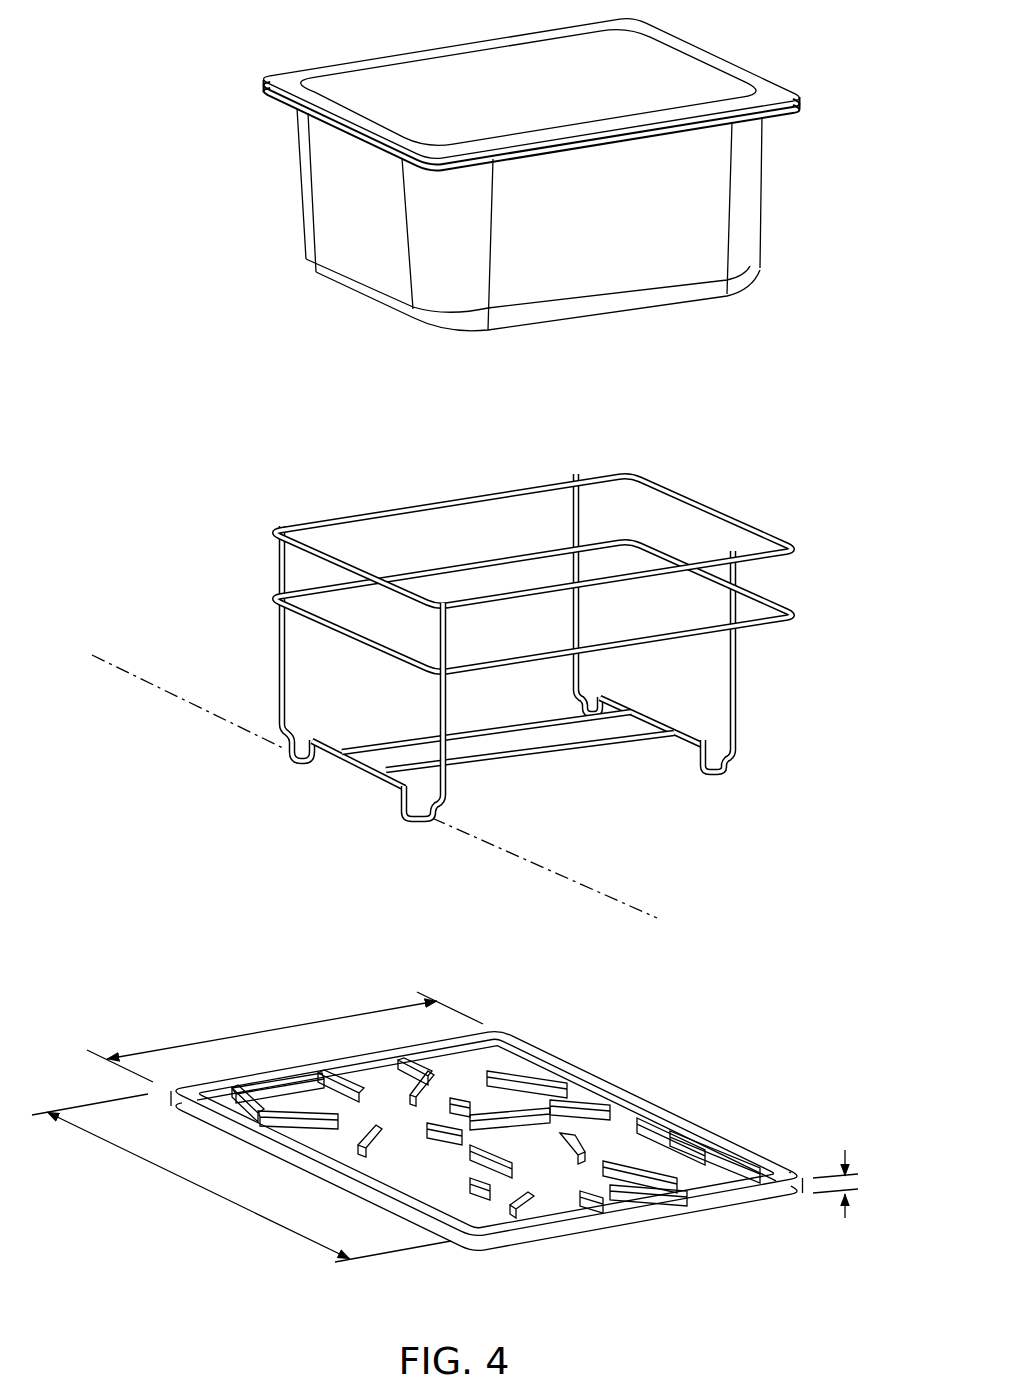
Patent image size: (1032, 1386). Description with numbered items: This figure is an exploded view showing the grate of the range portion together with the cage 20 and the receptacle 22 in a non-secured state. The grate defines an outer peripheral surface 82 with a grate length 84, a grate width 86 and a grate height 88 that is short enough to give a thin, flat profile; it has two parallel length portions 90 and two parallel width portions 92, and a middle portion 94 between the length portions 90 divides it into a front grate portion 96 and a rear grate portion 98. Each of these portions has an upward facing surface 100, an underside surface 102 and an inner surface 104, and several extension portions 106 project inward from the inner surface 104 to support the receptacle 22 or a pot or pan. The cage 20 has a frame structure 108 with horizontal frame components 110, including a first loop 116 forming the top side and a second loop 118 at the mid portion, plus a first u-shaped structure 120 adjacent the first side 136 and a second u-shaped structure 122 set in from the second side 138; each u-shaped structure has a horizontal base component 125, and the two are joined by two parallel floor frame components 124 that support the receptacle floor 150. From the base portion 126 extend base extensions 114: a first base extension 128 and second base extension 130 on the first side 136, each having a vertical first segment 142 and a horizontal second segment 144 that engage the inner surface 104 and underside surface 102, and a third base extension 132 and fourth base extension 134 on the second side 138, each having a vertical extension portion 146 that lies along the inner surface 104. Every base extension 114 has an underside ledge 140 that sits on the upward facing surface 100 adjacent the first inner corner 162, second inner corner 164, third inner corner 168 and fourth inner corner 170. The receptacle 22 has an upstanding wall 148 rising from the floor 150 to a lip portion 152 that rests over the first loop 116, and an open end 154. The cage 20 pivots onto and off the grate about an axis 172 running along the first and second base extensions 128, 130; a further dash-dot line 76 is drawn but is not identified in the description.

The cage 20 is at (536, 674).
The receptacle 22 is at (566, 176).
The longitudinal axis 76 is at (617, 896).
The outer peripheral surface 82 is at (473, 1140).
The grate length 84 is at (180, 1173).
The grate width 86 is at (296, 1028).
The grate height 88 is at (848, 1155).
The length portions 90 is at (503, 1143).
The width portions 92 is at (653, 1228).
The middle portion 94 is at (486, 1168).
The front grate portion 96 is at (514, 1168).
The rear grate portion 98 is at (486, 1115).
The upward facing surface 100 is at (514, 1168).
The underside surface 102 is at (486, 1168).
The inner surface 104 is at (498, 1038).
The extension portions 106 is at (703, 1152).
The frame structure 108 is at (741, 663).
The horizontal frame components 110 is at (663, 651).
The base extensions 114 is at (566, 820).
The first loop 116 is at (514, 490).
The second loop 118 is at (533, 617).
The first u-shaped structure 120 is at (287, 669).
The second u-shaped structure 122 is at (576, 615).
The floor frame components 124 is at (566, 752).
The horizontal base component 125 is at (520, 690).
The base portion 126 is at (536, 674).
The first base extension 128 is at (255, 789).
The second base extension 130 is at (439, 836).
The third base extension 132 is at (576, 703).
The fourth base extension 134 is at (697, 792).
The first side 136 is at (467, 570).
The second side 138 is at (536, 570).
The underside ledge 140 is at (448, 806).
The first segment 142 is at (313, 752).
The second segment 144 is at (259, 789).
The vertical extension portion 146 is at (701, 757).
The upstanding wall 148 is at (752, 185).
The floor 150 is at (597, 318).
The lip portion 152 is at (562, 85).
The open end 154 is at (716, 68).
The first inner corner 162 is at (486, 1168).
The second inner corner 164 is at (478, 1227).
The third inner corner 168 is at (486, 1168).
The fourth inner corner 170 is at (789, 1172).
The axis 172 is at (359, 786).